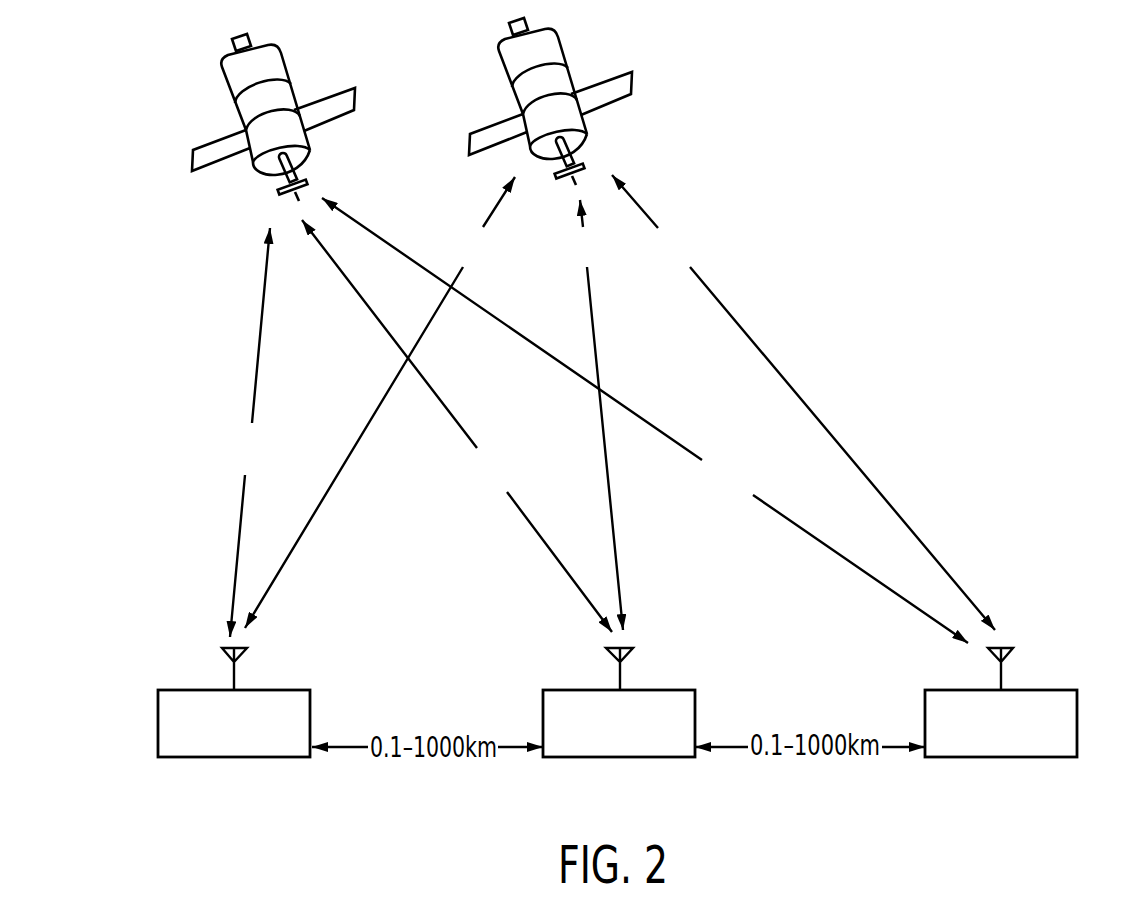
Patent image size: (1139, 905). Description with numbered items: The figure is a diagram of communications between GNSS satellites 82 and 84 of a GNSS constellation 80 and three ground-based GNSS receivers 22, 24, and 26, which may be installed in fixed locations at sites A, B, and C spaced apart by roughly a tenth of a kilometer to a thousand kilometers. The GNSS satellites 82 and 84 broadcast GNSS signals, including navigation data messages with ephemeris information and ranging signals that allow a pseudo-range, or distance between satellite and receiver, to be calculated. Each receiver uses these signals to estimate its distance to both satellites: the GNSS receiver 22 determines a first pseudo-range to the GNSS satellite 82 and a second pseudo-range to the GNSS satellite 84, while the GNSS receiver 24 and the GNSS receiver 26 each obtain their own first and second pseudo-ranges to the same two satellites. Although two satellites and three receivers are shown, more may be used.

The GNSS receiver 22 is at (158, 723).
The GNSS receiver 24 is at (560, 757).
The GNSS receiver 26 is at (1078, 723).
The GNSS constellation 80 is at (996, 185).
The GNSS satellite 82 is at (595, 47).
The GNSS satellite 84 is at (318, 73).